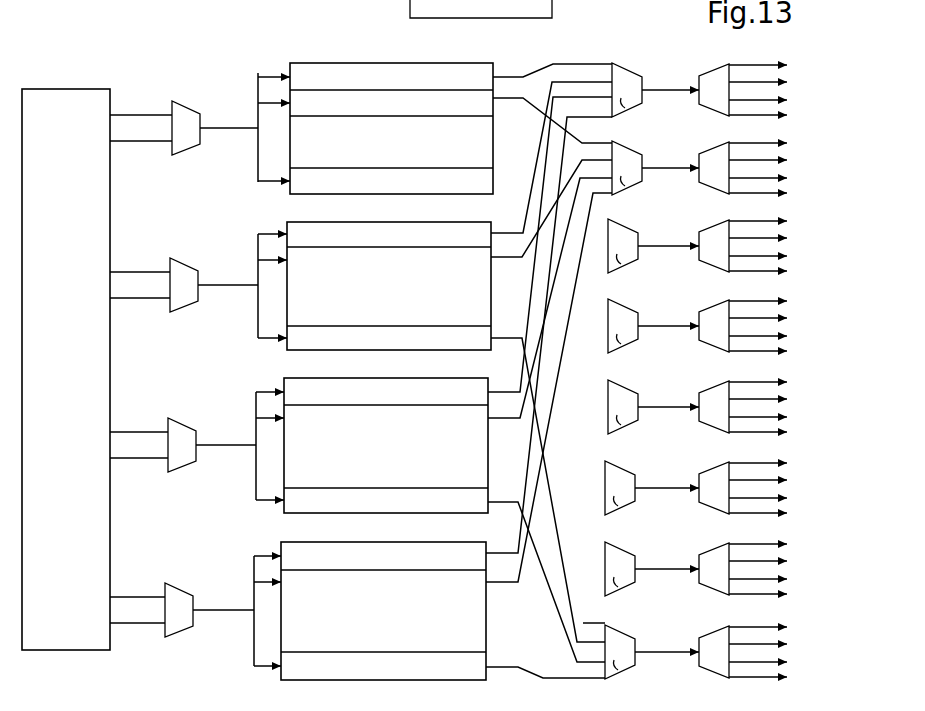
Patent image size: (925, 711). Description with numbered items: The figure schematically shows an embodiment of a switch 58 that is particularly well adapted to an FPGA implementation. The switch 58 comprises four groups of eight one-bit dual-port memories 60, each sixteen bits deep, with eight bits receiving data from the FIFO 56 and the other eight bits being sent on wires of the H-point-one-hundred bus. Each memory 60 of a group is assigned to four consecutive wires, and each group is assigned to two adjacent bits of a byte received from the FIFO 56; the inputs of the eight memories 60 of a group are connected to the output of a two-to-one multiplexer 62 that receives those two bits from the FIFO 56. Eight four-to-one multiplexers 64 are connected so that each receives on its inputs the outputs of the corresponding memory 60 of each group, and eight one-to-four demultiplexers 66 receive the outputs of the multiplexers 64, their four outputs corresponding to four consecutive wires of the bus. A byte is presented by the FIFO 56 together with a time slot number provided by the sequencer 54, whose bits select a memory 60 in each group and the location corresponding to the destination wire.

The sequencer 54 is at (520, 7).
The FIFO 56 is at (80, 137).
The switch 58 is at (253, 70).
The 1-bit dual-port memory 60 is at (387, 371).
The 2-1 multiplexer 62 is at (184, 385).
The 4-1 multiplexer 64 is at (652, 371).
The 1-4 demultiplexer 66 is at (775, 372).